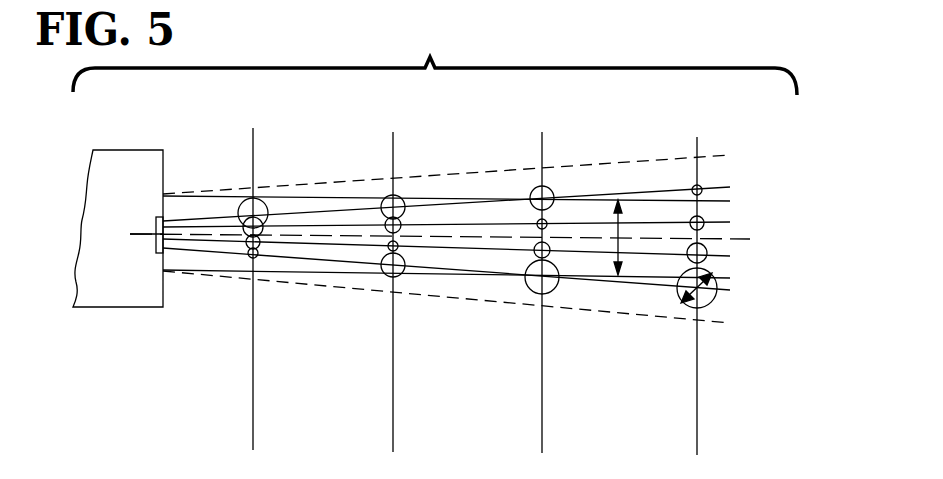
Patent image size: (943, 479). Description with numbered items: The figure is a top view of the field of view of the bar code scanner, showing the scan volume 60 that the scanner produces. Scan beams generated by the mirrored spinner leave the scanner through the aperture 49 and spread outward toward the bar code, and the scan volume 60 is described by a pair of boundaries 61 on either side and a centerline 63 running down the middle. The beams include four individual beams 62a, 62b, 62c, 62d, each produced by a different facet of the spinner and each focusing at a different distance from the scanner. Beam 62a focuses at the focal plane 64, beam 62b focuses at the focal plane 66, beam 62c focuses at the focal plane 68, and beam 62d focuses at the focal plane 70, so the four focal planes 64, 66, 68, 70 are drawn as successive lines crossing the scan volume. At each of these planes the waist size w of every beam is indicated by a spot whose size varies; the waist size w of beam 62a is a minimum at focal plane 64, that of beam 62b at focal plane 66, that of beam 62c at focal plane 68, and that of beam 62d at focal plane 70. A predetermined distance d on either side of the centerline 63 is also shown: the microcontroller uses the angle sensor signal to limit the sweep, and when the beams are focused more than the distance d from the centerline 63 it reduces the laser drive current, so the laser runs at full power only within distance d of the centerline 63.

The aperture 49 is at (155, 246).
The scan volume 60 is at (612, 158).
The boundaries 61 is at (713, 152).
The beam 62a is at (720, 187).
The beam 62b is at (720, 223).
The beam 62c is at (722, 256).
The beam 62d is at (723, 292).
The centerline 63 is at (740, 238).
The focal plane 64 is at (698, 418).
The focal plane 66 is at (545, 418).
The focal plane 68 is at (395, 415).
The focal plane 70 is at (255, 410).
The predetermined distance d is at (626, 241).
The waist size w is at (685, 295).